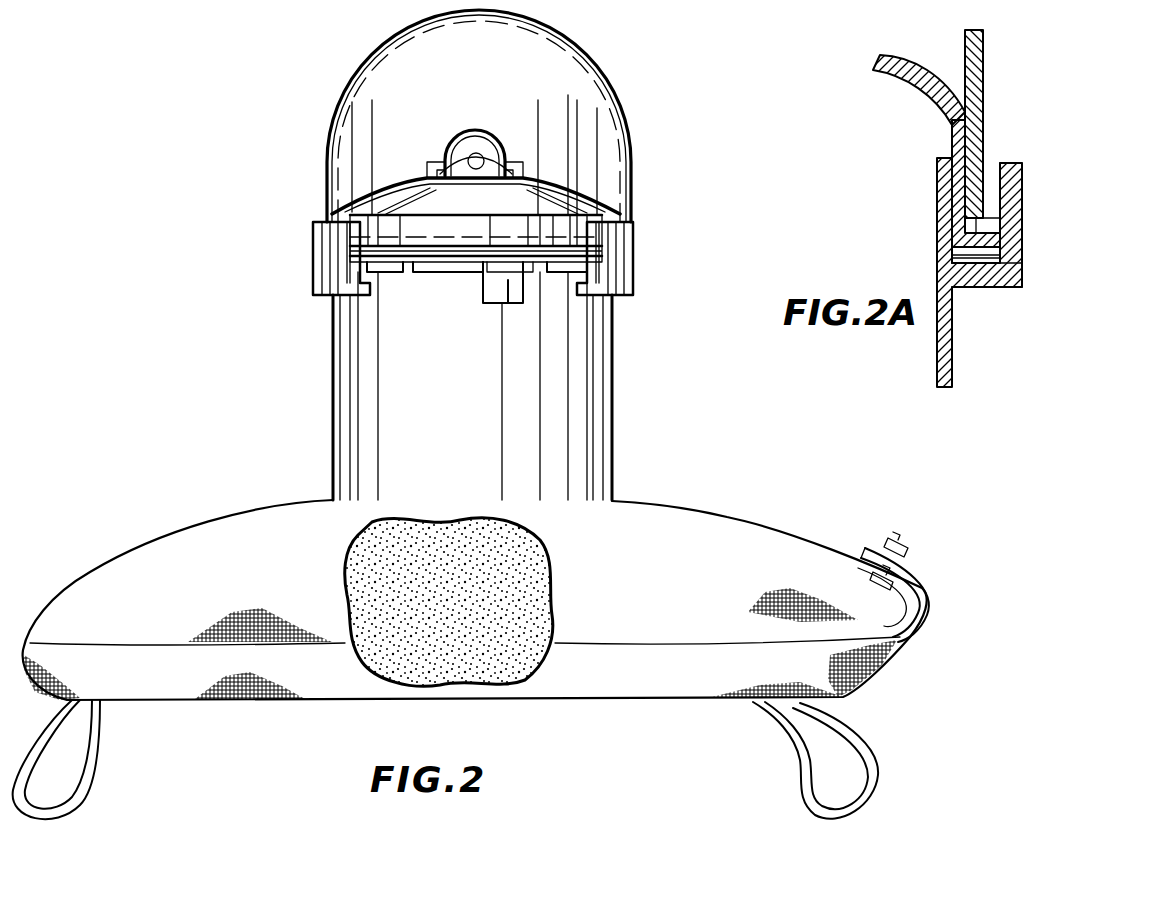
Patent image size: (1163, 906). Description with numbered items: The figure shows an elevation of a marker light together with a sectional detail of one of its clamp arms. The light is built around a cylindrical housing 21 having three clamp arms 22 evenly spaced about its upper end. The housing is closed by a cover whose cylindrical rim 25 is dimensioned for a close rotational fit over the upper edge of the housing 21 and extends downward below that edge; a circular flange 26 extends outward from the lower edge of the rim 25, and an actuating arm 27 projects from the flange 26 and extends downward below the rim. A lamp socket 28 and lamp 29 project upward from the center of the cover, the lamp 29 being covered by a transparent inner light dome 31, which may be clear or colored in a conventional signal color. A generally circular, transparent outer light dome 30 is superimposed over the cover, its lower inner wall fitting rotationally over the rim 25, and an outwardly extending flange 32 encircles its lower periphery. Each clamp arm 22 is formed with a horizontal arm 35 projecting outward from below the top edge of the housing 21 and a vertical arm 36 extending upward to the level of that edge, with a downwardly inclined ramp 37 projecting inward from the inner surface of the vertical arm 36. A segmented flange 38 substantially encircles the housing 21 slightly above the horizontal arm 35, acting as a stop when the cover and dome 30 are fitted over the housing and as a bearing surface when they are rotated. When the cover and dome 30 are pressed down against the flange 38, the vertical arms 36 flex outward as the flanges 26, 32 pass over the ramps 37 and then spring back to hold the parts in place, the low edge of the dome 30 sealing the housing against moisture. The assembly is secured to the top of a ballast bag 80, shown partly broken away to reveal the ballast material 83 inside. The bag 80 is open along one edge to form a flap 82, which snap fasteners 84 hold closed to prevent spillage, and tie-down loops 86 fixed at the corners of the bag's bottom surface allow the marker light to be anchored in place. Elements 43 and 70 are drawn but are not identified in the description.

In FIG. 2, the cylindrical housing 21 is at (612, 345).
In FIG. 2A, the cylindrical housing 21 is at (937, 245).
In FIG. 2, the clamp arm 22 is at (313, 257).
In FIG. 2A, the cylindrical rim 25 is at (952, 140).
In FIG. 2A, the circular flange 26 is at (1002, 252).
In FIG. 2, the actuating arm 27 is at (510, 305).
In FIG. 2, the lamp socket 28 is at (505, 150).
In FIG. 2, the lamp 29 is at (450, 148).
In FIG. 2, the outer light dome 30 is at (604, 80).
In FIG. 2A, the outer light dome 30 is at (985, 66).
In FIG. 2, the inner light dome 31 is at (452, 150).
In FIG. 2A, the outwardly extending flange 32 is at (1003, 222).
In FIG. 2A, the horizontal arm 35 is at (1005, 288).
In FIG. 2A, the vertical arm 36 is at (1022, 180).
In FIG. 2A, the downwardly inclined ramp 37 is at (990, 215).
In FIG. 2, the segmented flange 38 is at (395, 274).
In FIG. 2A, the segmented flange 38 is at (965, 264).
In FIG. 2, the bracket 43 is at (427, 172).
In FIG. 2, the retaining tab 70 is at (458, 274).
In FIG. 2, the ballast bag 80 is at (717, 516).
In FIG. 2, the flap 82 is at (868, 548).
In FIG. 2, the ballast material 83 is at (467, 657).
In FIG. 2, the snap fasteners 84 is at (905, 545).
In FIG. 2, the tie-down loops 86 is at (95, 776).